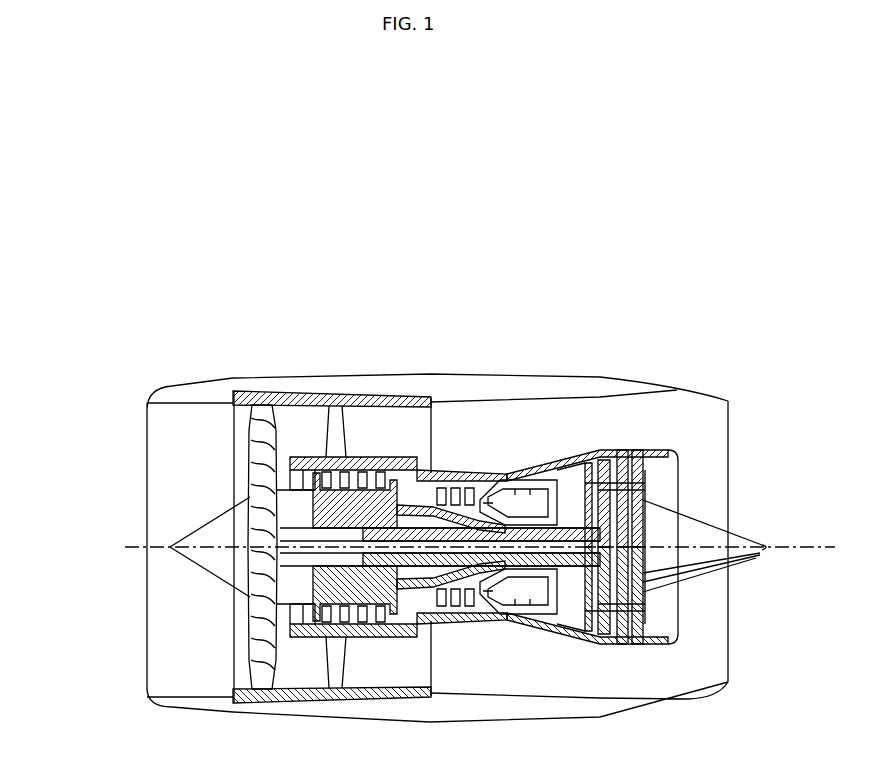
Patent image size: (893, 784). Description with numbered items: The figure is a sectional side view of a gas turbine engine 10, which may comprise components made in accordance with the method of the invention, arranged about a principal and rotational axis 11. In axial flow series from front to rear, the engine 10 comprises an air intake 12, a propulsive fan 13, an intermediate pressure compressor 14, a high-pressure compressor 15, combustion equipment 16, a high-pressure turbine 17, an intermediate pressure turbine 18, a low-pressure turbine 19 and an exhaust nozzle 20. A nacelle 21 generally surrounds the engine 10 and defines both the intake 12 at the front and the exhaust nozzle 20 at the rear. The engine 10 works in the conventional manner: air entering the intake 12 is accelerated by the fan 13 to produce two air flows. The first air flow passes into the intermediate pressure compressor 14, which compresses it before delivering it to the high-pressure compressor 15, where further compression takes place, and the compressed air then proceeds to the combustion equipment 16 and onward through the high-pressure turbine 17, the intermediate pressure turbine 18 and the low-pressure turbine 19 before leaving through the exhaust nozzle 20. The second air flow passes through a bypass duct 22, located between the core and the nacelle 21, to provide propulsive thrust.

The gas turbine engine 10 is at (128, 432).
The principal and rotational axis 11 is at (137, 546).
The air intake 12 is at (203, 400).
The propulsive fan 13 is at (253, 660).
The intermediate pressure compressor 14 is at (352, 602).
The high-pressure compressor 15 is at (454, 487).
The combustion equipment 16 is at (518, 607).
The high-pressure turbine 17 is at (550, 612).
The intermediate pressure turbine 18 is at (578, 465).
The low-pressure turbine 19 is at (600, 628).
The exhaust nozzle 20 is at (728, 683).
The nacelle 21 is at (553, 375).
The bypass duct 22 is at (408, 444).